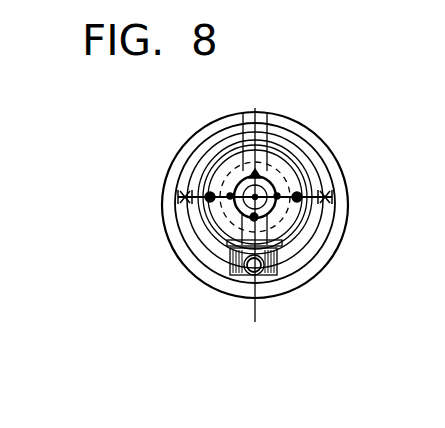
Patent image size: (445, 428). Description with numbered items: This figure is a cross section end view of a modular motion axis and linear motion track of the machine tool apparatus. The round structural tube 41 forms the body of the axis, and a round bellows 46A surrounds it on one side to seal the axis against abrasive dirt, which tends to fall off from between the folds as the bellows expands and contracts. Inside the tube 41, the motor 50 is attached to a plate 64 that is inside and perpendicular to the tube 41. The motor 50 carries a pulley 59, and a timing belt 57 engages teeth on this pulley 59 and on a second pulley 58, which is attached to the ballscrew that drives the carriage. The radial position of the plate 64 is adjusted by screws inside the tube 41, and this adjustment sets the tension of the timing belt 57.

The structural tube 41 is at (292, 148).
The bellows 46A is at (191, 259).
The Y axis motor 50 is at (270, 165).
The timing belt 57 is at (232, 232).
The pulley 58 is at (262, 277).
The pulley 59 is at (210, 195).
The plate 64 is at (242, 160).